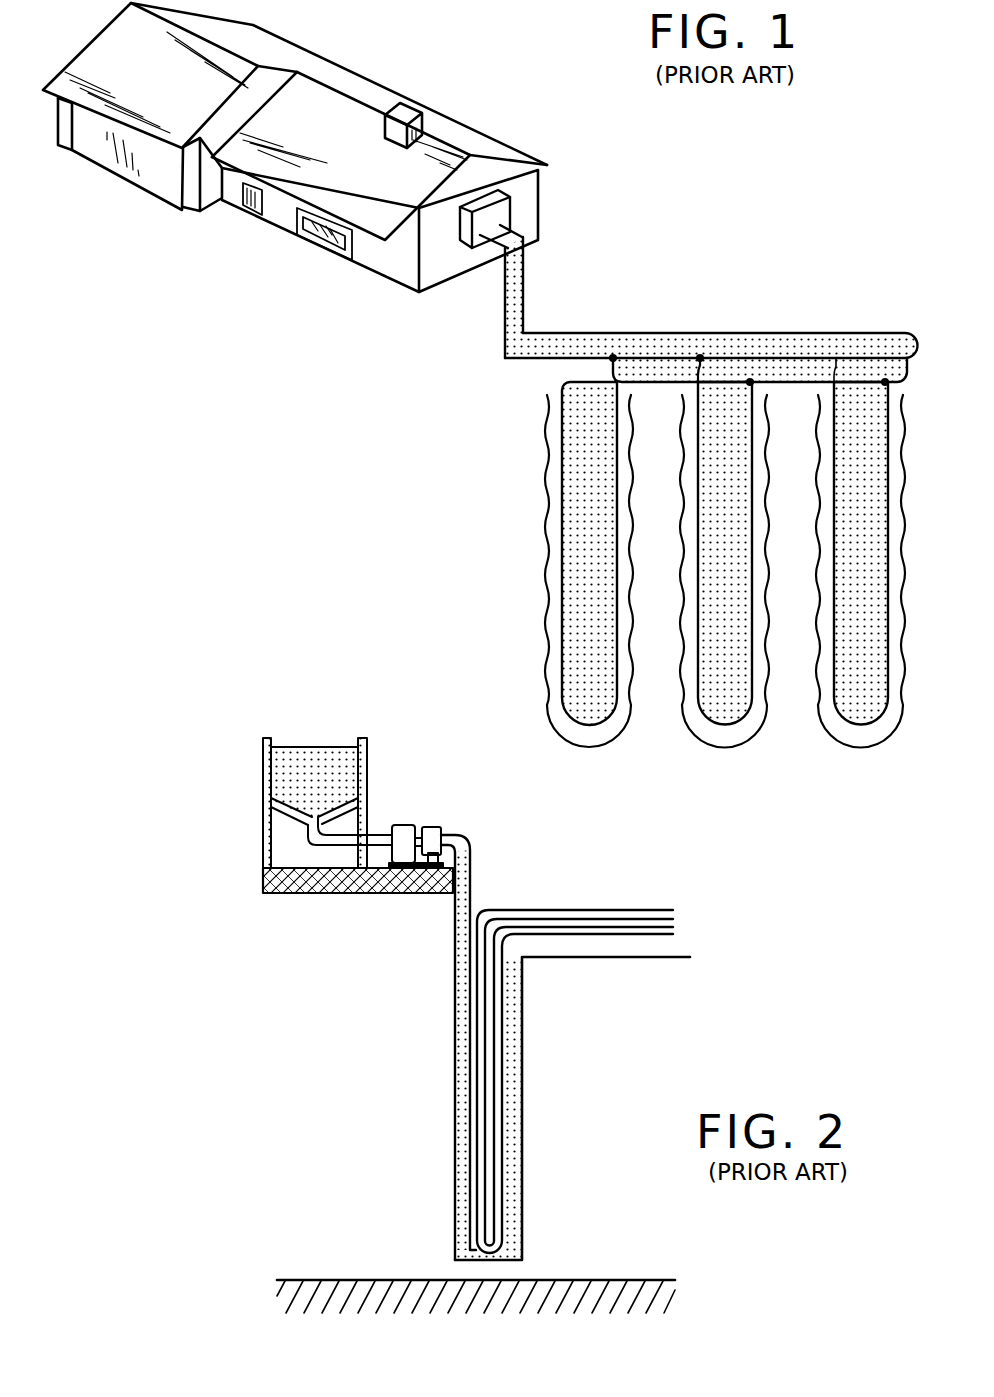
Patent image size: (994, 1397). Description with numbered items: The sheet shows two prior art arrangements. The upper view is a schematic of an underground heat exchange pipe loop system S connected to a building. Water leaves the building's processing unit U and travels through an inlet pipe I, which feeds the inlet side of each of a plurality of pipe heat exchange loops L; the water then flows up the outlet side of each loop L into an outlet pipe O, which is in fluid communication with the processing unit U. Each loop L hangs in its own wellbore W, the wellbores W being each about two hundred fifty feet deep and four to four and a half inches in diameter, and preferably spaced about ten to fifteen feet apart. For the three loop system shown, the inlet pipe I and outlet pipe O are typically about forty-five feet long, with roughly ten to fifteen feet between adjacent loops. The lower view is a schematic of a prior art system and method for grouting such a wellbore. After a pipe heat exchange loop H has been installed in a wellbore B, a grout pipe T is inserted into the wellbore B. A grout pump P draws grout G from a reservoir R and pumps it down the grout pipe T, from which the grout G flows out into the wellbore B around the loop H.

In FIG. 1, the processing unit U is at (508, 208).
In FIG. 1, the inlet pipe I is at (720, 333).
In FIG. 1, the outlet pipe O is at (530, 362).
In FIG. 1, the underground heat exchange pipe loop system S is at (478, 451).
In FIG. 1, the pipe heat exchange loop L is at (615, 537).
In FIG. 1, the wellbore W is at (546, 537).
In FIG. 2, the grout G is at (312, 745).
In FIG. 2, the reservoir R is at (264, 768).
In FIG. 2, the grout pump P is at (427, 818).
In FIG. 2, the grout pipe T is at (460, 952).
In FIG. 2, the pipe heat exchange loop H is at (492, 1076).
In FIG. 2, the wellbore B is at (523, 1183).